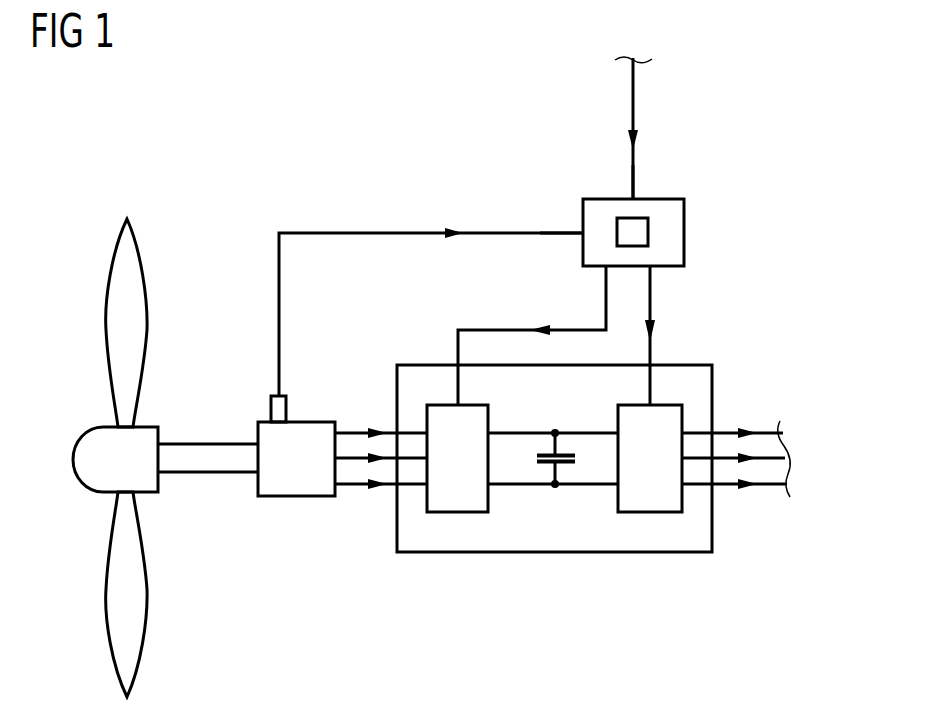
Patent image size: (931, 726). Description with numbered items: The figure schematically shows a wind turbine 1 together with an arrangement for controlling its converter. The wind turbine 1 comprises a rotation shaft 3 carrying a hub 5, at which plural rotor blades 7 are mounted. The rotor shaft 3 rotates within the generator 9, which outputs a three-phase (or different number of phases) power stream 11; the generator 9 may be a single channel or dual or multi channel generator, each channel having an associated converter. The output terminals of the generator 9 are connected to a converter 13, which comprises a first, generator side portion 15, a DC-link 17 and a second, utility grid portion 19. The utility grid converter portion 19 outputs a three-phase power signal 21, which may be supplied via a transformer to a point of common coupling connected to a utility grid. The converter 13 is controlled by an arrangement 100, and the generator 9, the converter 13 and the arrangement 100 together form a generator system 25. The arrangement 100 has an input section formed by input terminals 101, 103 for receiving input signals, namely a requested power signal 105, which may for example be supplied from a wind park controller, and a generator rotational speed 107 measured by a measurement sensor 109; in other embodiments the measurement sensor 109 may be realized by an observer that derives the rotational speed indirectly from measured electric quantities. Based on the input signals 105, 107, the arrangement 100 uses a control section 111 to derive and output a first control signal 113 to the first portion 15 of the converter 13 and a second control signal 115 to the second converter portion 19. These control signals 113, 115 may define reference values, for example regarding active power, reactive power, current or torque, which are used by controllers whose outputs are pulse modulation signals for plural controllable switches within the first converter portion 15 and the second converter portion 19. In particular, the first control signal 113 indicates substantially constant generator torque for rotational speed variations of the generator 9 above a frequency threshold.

The wind turbine 1 is at (812, 128).
The rotation shaft 3 is at (211, 462).
The hub 5 is at (83, 458).
The rotor blades 7 is at (127, 221).
The generator 9 is at (303, 420).
The power stream 11 is at (387, 458).
The converter 13 is at (497, 553).
The generator side portion 15 is at (493, 417).
The DC-link 17 is at (560, 512).
The utility grid portion 19 is at (650, 512).
The three-phase power signal 21 is at (760, 430).
The generator system 25 is at (325, 160).
The arrangement for controlling a converter 100 is at (684, 233).
The input terminal 101 is at (636, 195).
The input terminal 103 is at (580, 228).
The requested power signal 105 is at (632, 149).
The generator rotational speed 107 is at (467, 230).
The measurement sensor 109 is at (271, 405).
The control section 111 is at (648, 228).
The first control signal 113 is at (525, 328).
The second control signal 115 is at (652, 345).